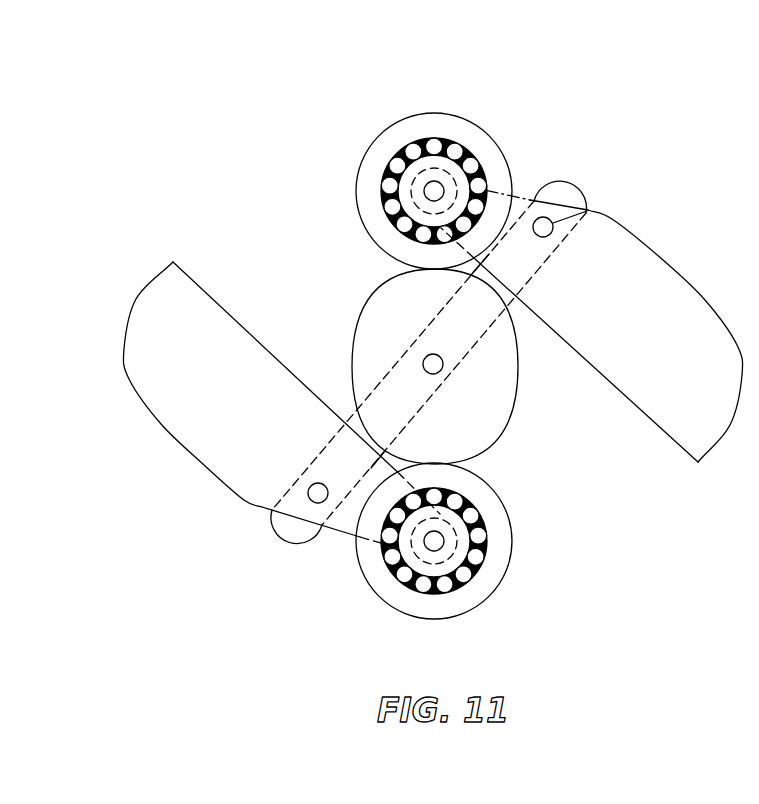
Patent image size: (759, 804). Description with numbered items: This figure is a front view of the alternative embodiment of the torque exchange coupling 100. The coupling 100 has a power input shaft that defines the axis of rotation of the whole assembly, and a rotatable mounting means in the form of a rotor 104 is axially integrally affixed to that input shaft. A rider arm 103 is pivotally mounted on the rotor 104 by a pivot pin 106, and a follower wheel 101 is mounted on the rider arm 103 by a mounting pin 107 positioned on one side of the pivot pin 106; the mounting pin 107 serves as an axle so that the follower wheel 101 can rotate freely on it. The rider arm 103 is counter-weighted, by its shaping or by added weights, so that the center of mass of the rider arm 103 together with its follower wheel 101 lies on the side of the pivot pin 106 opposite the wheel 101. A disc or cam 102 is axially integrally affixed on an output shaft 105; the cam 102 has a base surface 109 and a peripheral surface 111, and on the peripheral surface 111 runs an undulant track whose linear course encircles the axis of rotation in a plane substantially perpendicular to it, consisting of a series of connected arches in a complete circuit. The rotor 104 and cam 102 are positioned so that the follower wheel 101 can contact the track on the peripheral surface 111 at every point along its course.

The coupling 100 is at (547, 67).
The follower wheel 101 is at (425, 114).
The disc or cam 102 is at (372, 299).
The rider arm 103 is at (131, 320).
The rotor 104 is at (573, 177).
The output shaft 105 is at (443, 366).
The pivot pin 106 is at (592, 210).
The mounting pin 107 is at (441, 185).
The base surface 109 is at (475, 419).
The peripheral surface 111 is at (352, 343).